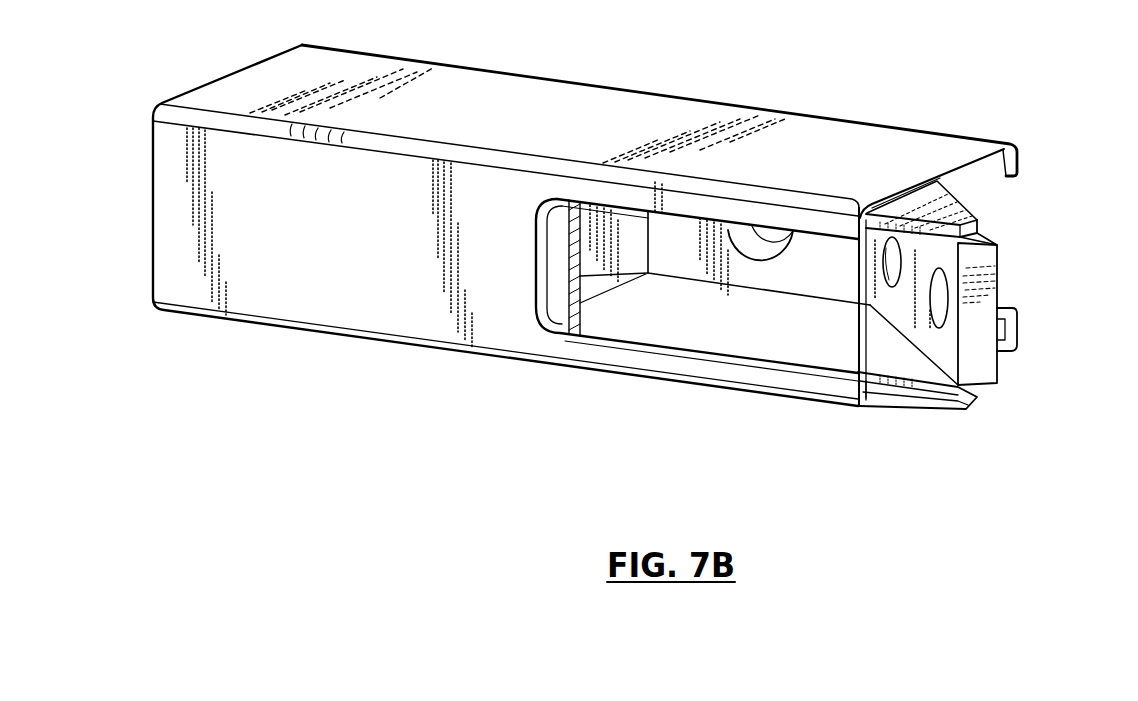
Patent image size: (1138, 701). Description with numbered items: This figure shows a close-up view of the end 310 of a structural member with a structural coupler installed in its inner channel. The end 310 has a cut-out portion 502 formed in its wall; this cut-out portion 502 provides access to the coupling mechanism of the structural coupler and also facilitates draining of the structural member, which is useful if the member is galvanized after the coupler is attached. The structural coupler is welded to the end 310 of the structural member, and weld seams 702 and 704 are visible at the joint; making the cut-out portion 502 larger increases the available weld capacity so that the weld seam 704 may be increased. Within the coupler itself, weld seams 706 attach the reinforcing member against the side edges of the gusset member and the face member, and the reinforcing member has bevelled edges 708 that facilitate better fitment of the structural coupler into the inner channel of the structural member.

The end 310 is at (876, 94).
The weld seam 702 is at (910, 187).
The weld seam 704 is at (537, 298).
The weld seam 706 is at (980, 233).
The bevelled edge 708 is at (957, 222).
The cut-out portion 502 is at (858, 325).